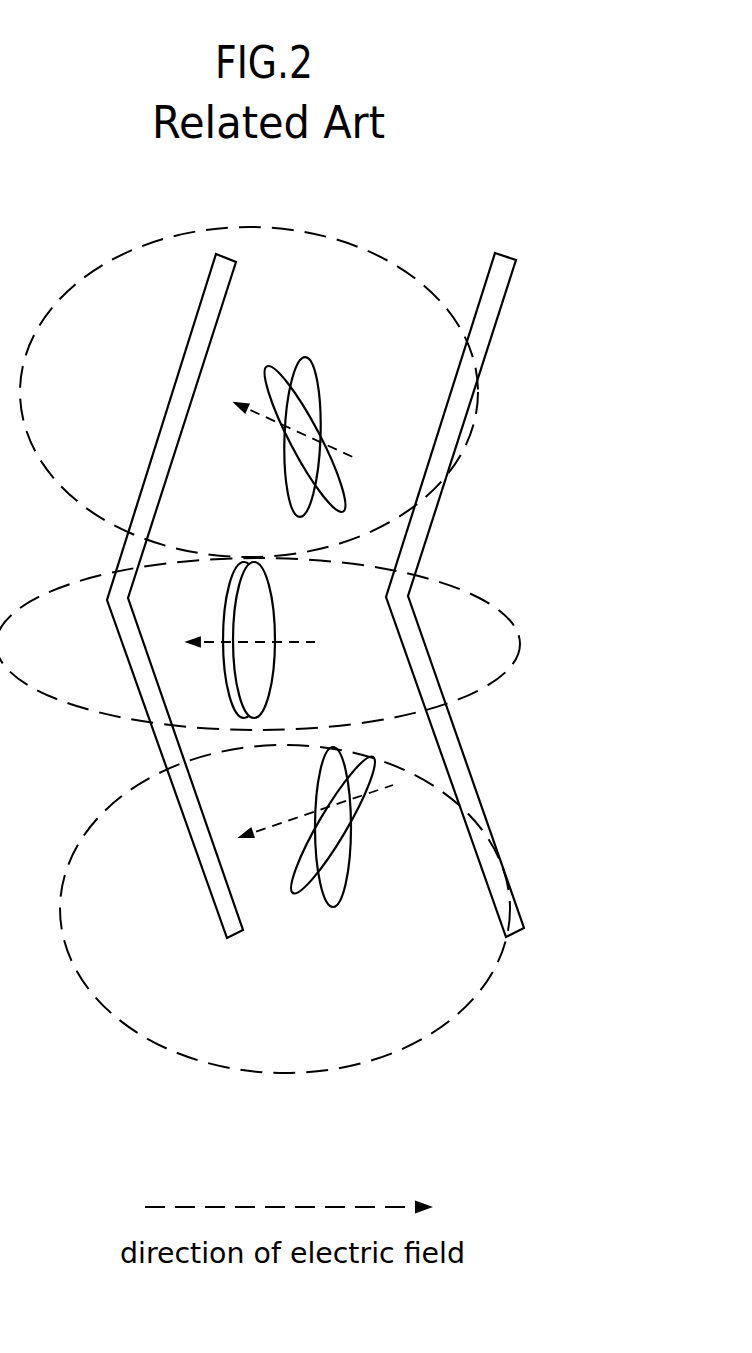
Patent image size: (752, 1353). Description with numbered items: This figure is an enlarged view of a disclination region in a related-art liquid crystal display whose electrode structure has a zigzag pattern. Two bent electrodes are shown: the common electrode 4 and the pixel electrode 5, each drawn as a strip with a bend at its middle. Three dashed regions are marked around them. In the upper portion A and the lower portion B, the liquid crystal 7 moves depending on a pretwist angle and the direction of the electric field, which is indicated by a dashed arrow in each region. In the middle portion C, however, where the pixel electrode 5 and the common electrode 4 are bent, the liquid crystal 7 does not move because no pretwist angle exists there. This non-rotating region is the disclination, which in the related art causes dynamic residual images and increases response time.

The common electrode 4 is at (221, 895).
The pixel electrode 5 is at (443, 752).
The liquid crystal 7 is at (347, 821).
The portion A is at (284, 392).
The portion B is at (319, 909).
The portion C is at (280, 644).